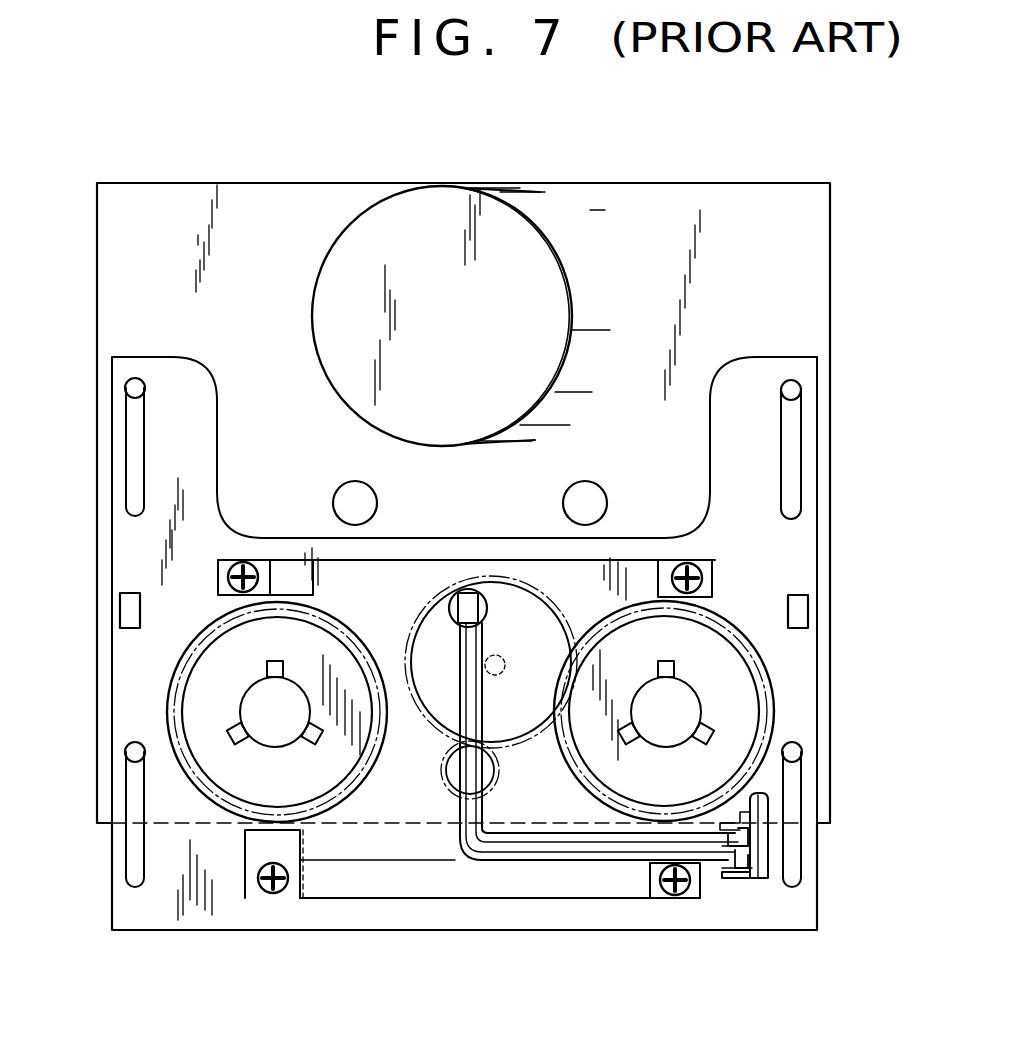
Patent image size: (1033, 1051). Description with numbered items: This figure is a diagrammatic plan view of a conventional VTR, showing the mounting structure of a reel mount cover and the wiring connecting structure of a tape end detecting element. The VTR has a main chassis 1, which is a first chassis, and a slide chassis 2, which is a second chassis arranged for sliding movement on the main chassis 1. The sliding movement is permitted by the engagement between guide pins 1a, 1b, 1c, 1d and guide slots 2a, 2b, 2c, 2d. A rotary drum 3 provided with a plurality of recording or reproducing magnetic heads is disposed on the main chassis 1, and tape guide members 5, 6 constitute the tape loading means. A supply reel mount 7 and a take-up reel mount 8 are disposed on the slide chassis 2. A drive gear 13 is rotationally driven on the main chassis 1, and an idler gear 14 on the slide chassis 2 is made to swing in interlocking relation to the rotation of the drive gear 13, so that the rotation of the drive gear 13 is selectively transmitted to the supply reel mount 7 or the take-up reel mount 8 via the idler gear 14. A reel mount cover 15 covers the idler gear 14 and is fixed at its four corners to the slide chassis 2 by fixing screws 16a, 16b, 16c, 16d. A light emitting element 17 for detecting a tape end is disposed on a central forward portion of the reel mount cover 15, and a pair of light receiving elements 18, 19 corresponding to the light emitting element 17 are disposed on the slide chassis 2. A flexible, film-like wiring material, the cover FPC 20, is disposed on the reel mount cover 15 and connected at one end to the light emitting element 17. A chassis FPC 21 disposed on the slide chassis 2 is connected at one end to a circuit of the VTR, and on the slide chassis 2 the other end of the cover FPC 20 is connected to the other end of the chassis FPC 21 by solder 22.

The main chassis 1 is at (766, 220).
The guide pin 1a is at (794, 752).
The guide pin 1b is at (792, 390).
The guide pin 1c is at (132, 752).
The guide pin 1d is at (130, 388).
The slide chassis 2 is at (796, 558).
The guide slot 2a is at (800, 866).
The guide slot 2b is at (800, 486).
The guide slot 2c is at (130, 852).
The guide slot 2d is at (130, 452).
The rotary drum 3 is at (435, 232).
The tape guide member 5 is at (345, 500).
The tape guide member 6 is at (588, 497).
The supply reel mount 7 is at (207, 688).
The take-up reel mount 8 is at (730, 682).
The drive gear 13 is at (458, 790).
The idler gear 14 is at (522, 605).
The reel mount cover 15 is at (433, 887).
The fixing screw 16a is at (668, 898).
The fixing screw 16b is at (685, 563).
The fixing screw 16c is at (262, 896).
The fixing screw 16d is at (250, 583).
The light emitting element 17 is at (468, 600).
The light receiving element 18 is at (128, 612).
The light receiving element 19 is at (800, 608).
The cover FPC 20 is at (527, 862).
The chassis FPC 21 is at (775, 835).
The solder 22 is at (748, 870).